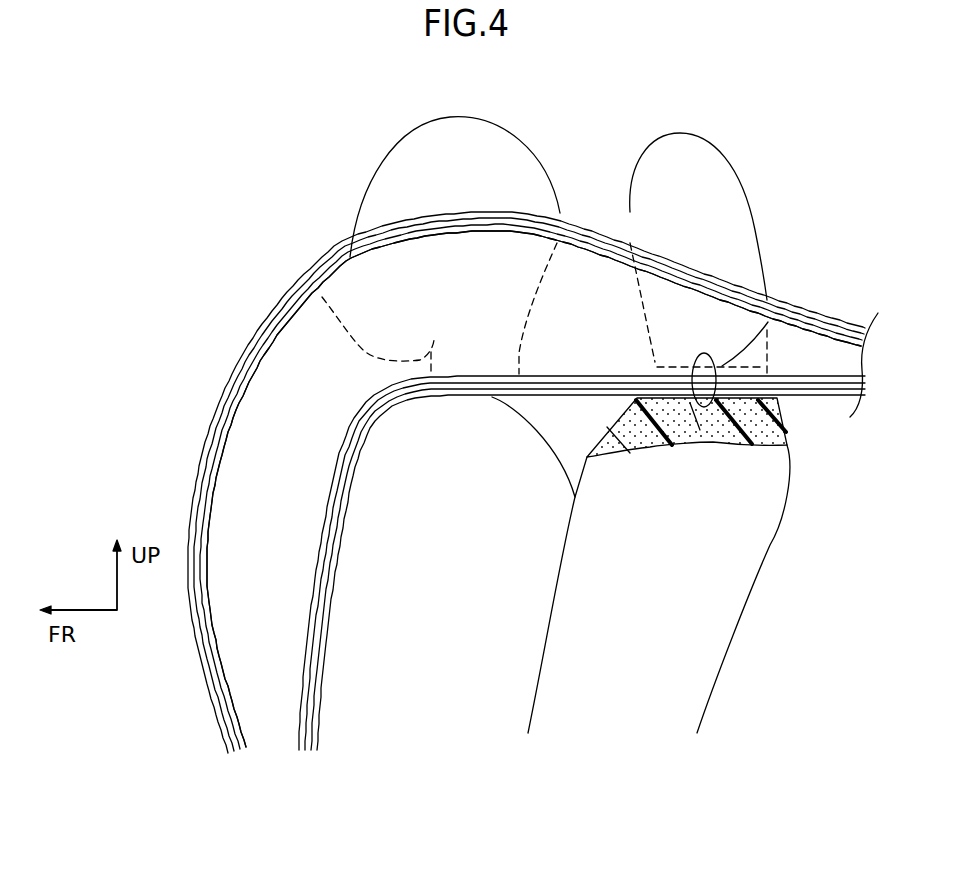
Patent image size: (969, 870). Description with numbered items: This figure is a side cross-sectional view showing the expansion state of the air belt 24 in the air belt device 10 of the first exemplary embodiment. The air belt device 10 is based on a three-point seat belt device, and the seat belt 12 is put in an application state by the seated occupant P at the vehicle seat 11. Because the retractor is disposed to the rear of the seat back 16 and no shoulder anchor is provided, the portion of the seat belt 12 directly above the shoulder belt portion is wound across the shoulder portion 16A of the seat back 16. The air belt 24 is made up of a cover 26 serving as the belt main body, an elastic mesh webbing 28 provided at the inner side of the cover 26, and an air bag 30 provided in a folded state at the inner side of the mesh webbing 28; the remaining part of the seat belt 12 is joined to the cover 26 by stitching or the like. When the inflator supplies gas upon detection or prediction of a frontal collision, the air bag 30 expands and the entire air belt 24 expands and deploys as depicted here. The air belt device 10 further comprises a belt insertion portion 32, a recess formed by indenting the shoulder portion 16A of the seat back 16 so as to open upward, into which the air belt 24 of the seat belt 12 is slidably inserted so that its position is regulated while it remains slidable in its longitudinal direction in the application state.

The air belt 24 is at (482, 482).
The seat belt 12 is at (244, 342).
The cover 26 is at (205, 437).
The mesh webbing 28 is at (212, 432).
The air bag 30 is at (230, 404).
The belt insertion portion 32 is at (700, 407).
The seat back 16 is at (697, 627).
The shoulder portion 16A is at (768, 322).
The vehicle seat 11 is at (712, 683).
The air belt device 10 is at (763, 166).
The seated occupant P is at (556, 148).